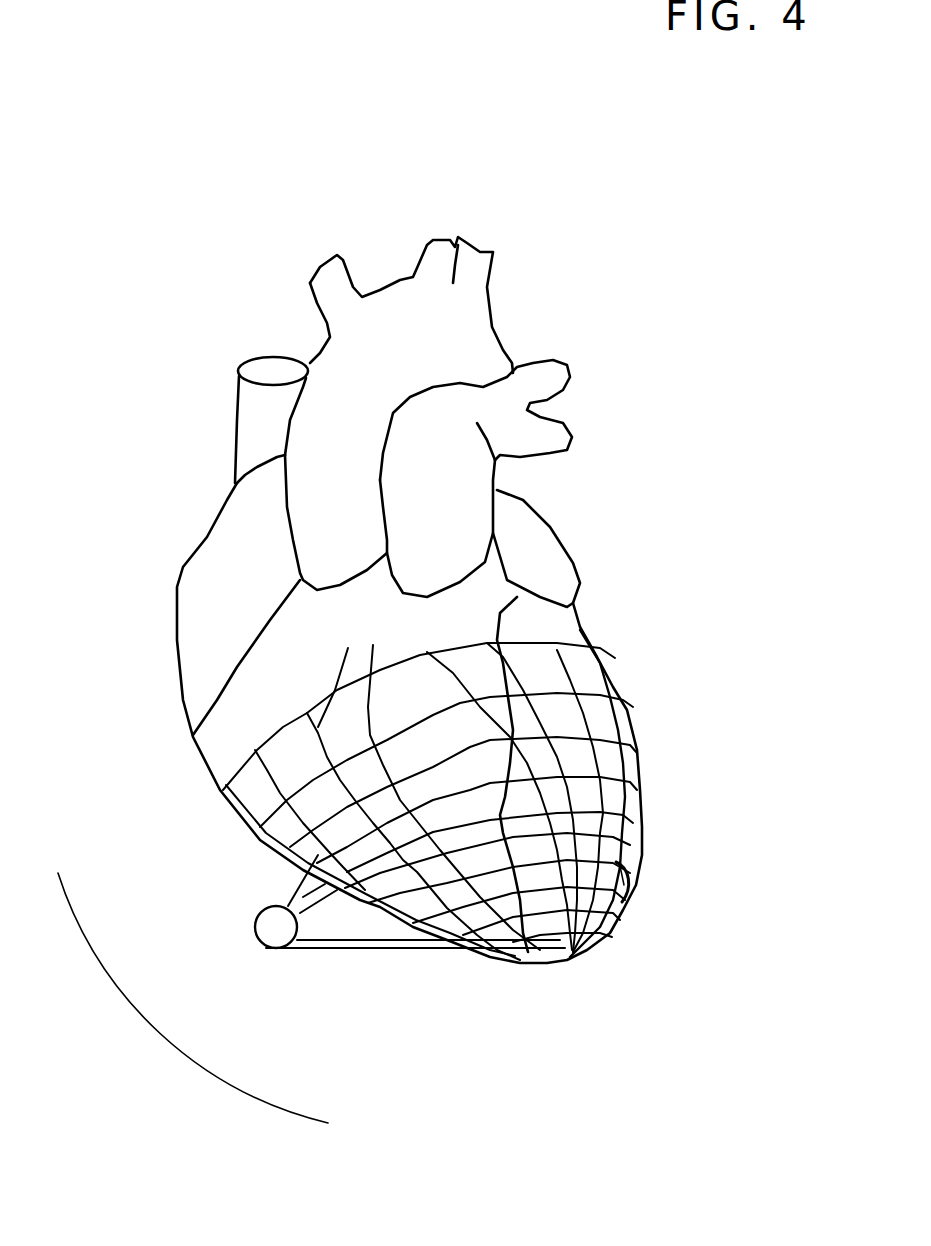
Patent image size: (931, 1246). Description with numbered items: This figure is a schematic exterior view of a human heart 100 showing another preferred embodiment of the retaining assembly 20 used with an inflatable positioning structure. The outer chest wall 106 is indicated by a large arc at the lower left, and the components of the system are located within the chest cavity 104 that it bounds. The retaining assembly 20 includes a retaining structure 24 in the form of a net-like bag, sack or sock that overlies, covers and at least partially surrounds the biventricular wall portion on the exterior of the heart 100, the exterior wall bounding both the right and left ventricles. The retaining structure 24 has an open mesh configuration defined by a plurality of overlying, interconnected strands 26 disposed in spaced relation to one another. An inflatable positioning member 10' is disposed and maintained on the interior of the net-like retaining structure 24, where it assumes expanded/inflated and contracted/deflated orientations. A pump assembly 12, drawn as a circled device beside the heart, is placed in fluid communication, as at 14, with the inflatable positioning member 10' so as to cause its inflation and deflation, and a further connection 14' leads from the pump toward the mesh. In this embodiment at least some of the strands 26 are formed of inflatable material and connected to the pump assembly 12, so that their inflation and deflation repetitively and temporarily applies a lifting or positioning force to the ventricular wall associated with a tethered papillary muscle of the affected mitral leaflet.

The heart 100 is at (635, 455).
The retaining assembly 20 is at (643, 727).
The retaining structure 24 is at (620, 667).
The strands 26 is at (390, 658).
The inflatable positioning member 10' is at (680, 885).
The lead 14' is at (255, 884).
The pump assembly 12 is at (253, 934).
The fluid communication 14 is at (415, 973).
The chest cavity 104 is at (327, 1024).
The outer chest wall 106 is at (250, 1091).